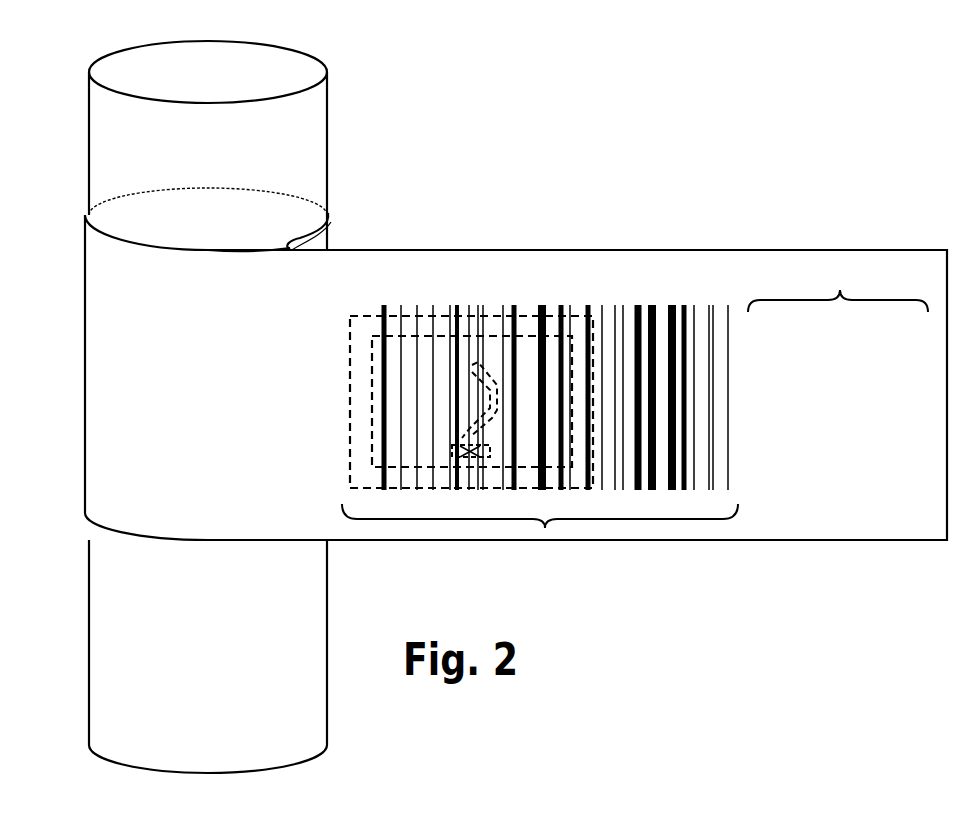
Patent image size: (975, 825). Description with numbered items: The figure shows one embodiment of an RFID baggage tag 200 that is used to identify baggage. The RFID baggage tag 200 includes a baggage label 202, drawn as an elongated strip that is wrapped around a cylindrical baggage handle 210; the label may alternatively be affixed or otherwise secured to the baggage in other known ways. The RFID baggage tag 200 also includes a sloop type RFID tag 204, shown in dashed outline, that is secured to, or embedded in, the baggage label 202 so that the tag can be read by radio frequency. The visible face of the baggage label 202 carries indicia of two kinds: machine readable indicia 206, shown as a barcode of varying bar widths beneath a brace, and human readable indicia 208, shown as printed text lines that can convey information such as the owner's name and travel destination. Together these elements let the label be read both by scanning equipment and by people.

The RFID baggage tag 200 is at (58, 106).
The baggage label 202 is at (334, 276).
The sloop type RFID tag 204 is at (438, 338).
The machine readable indicia 206 is at (545, 528).
The human readable indicia 208 is at (840, 290).
The baggage handle 210 is at (264, 137).